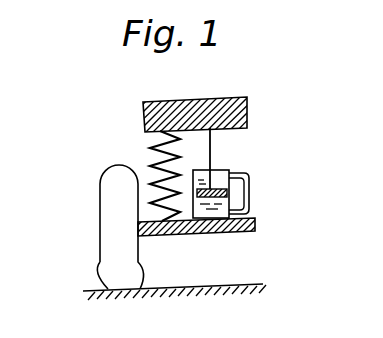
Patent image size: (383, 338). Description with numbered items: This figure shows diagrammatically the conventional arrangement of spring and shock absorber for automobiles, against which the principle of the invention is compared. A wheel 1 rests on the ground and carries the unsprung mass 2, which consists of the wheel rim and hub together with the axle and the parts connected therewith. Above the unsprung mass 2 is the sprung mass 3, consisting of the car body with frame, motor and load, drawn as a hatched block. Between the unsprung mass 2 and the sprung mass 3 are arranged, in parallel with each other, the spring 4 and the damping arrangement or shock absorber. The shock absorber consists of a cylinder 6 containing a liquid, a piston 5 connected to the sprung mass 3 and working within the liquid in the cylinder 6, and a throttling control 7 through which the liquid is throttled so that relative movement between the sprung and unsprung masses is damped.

The wheel 1 is at (100, 201).
The unsprung mass 2 is at (250, 232).
The sprung mass 3 is at (249, 112).
The spring 4 is at (152, 147).
The piston 5 is at (222, 178).
The cylinder 6 is at (233, 206).
The throttling control 7 is at (256, 193).